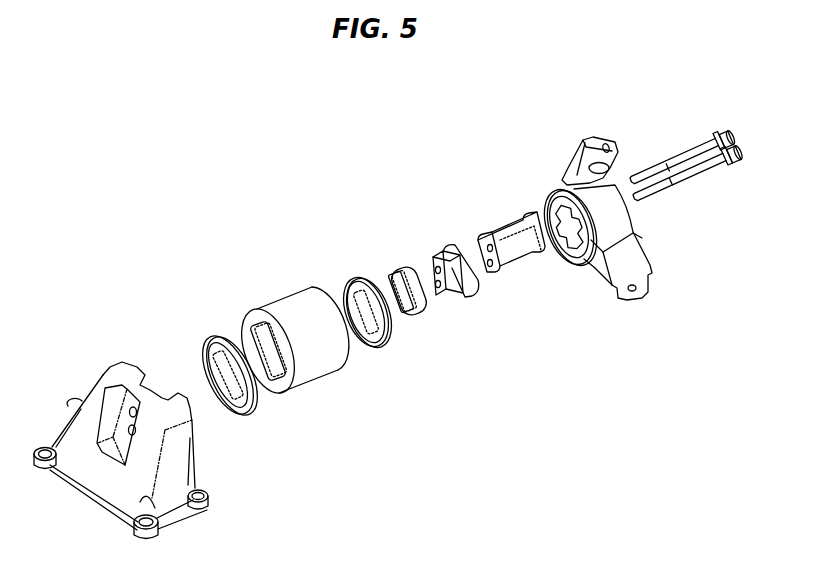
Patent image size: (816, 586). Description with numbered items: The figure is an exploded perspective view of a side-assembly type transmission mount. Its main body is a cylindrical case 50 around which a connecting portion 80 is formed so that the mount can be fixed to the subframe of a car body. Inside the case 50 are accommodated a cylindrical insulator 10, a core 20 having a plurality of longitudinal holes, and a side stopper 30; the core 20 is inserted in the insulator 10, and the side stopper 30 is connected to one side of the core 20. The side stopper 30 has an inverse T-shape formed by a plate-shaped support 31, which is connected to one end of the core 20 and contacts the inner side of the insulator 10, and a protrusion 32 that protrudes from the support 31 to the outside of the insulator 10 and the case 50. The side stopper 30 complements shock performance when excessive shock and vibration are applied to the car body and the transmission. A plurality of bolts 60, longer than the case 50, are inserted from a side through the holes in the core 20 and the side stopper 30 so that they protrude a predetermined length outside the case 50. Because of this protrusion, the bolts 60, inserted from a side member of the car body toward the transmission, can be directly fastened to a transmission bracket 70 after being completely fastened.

The cylindrical insulator 10 is at (555, 187).
The core 20 is at (505, 233).
The side stopper 30 is at (430, 153).
The support 31 is at (453, 248).
The protrusion 32 is at (438, 262).
The cylindrical case 50 is at (297, 317).
The bolts 60 is at (682, 157).
The transmission bracket 70 is at (105, 392).
The connecting portion 80 is at (593, 135).